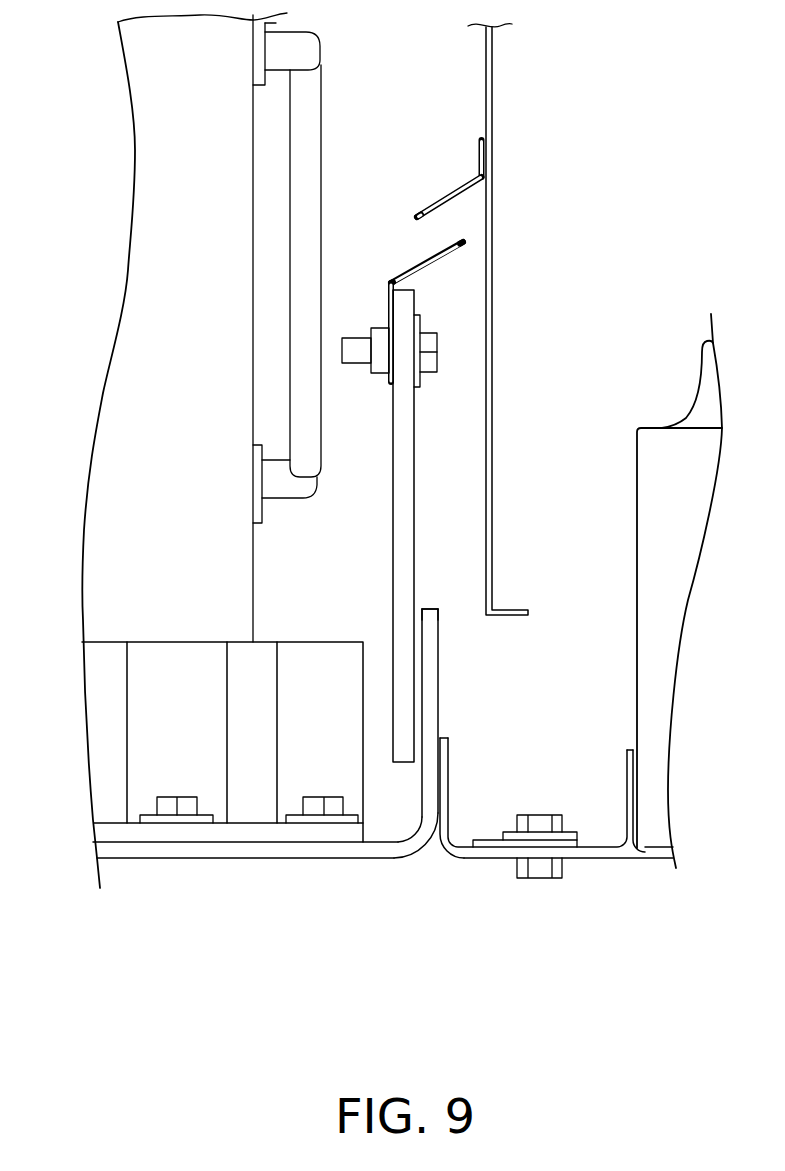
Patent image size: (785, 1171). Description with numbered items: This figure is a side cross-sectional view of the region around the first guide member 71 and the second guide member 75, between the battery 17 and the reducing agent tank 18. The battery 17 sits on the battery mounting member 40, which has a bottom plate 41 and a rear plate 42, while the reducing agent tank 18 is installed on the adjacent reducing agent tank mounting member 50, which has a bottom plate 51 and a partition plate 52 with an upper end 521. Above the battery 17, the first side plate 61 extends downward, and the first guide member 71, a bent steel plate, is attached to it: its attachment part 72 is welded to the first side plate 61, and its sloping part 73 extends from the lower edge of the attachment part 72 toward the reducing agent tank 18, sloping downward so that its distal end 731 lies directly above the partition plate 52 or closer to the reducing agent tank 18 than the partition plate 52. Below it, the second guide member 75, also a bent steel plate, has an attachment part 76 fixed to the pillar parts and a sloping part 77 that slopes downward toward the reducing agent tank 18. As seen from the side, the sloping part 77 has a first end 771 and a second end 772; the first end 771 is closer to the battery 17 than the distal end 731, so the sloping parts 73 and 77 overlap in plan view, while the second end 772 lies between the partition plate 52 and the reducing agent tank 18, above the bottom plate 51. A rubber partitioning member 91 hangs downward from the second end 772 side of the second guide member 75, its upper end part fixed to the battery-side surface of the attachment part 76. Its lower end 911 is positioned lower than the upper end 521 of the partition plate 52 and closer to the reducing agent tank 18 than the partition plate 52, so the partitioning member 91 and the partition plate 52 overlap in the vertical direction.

The battery 17 is at (663, 615).
The reducing agent tank 18 is at (135, 333).
The battery mounting member 40 is at (556, 863).
The bottom plate 41 is at (497, 860).
The rear plate 42 is at (448, 765).
The reducing agent tank mounting member 50 is at (257, 862).
The bottom plate 51 is at (161, 860).
The partition plate 52 is at (510, 647).
The upper end 521 is at (430, 608).
The first side plate 61 is at (492, 275).
The first guide member 71 is at (402, 126).
The attachment part 72 is at (478, 151).
The sloping part 73 is at (402, 175).
The distal end 731 is at (372, 187).
The second guide member 75 is at (412, 263).
The attachment part 76 is at (388, 305).
The sloping part 77 is at (390, 294).
The first end 771 is at (462, 243).
The second end 772 is at (390, 283).
The partitioning member 91 is at (393, 572).
The lower end 911 is at (402, 765).